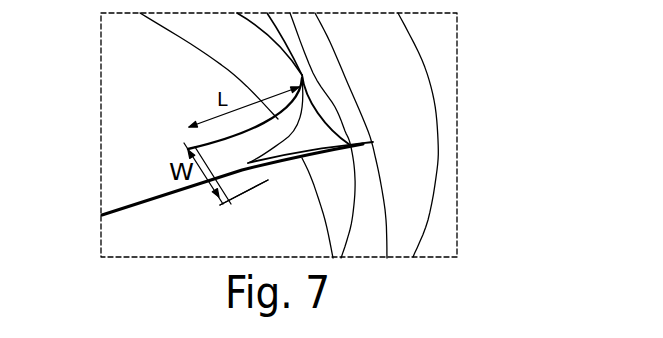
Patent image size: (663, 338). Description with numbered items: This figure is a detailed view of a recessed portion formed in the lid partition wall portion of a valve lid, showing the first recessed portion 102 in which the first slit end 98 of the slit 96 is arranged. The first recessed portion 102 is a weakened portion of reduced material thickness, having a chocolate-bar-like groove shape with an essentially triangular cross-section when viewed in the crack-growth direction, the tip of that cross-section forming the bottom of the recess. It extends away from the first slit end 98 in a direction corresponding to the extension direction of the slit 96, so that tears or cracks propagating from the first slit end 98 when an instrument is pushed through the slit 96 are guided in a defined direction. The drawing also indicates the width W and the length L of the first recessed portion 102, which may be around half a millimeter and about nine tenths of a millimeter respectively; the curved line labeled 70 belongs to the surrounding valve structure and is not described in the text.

The slit 96 is at (142, 193).
The rotor / housing wall 70 is at (328, 108).
The first recessed portion 102 is at (283, 163).
The first slit end 98 is at (218, 198).